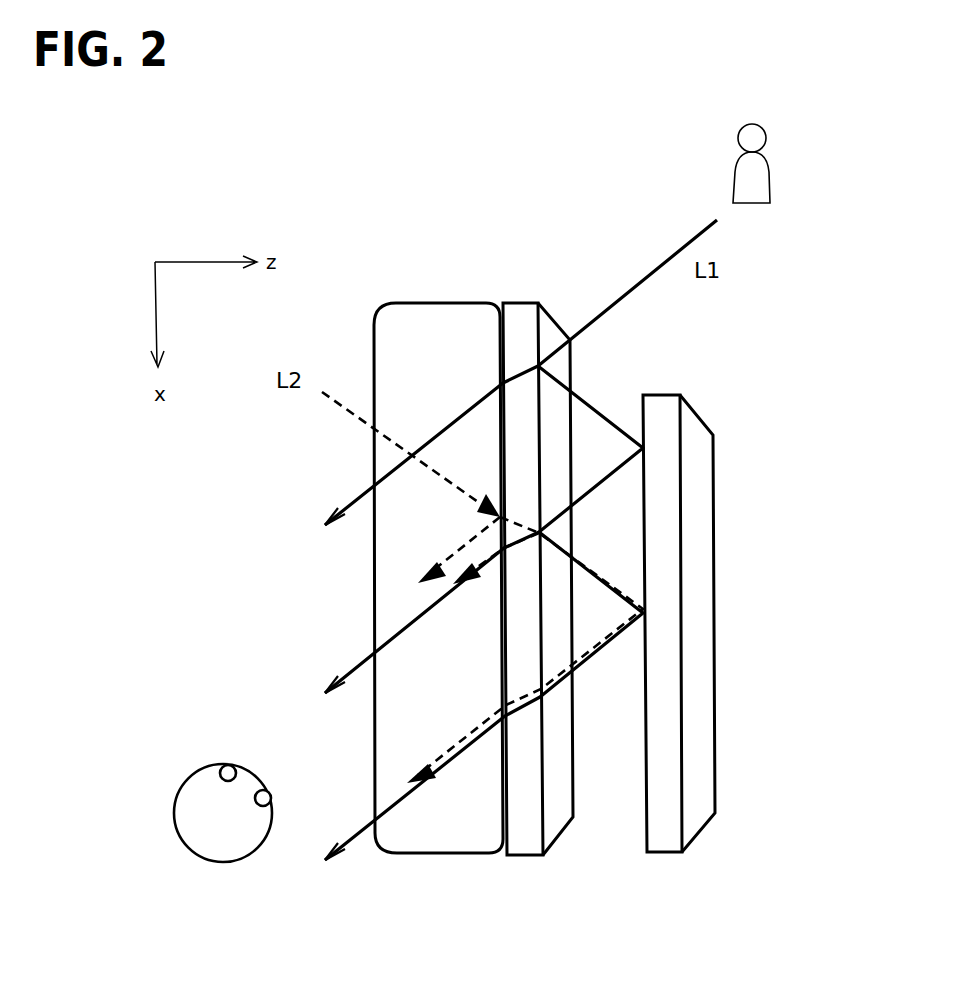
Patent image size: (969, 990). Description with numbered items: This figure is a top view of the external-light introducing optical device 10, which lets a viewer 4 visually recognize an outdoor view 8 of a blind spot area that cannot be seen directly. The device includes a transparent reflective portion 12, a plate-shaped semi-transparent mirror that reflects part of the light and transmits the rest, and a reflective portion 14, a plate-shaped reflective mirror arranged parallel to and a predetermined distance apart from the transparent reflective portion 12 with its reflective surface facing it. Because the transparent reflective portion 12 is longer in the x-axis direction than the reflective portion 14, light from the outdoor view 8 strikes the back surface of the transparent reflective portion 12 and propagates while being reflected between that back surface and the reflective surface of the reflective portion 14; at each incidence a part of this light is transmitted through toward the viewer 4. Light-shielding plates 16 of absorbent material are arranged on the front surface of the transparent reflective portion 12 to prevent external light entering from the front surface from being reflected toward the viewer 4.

The viewer 4 is at (243, 867).
The outdoor view 8 is at (760, 181).
The optical device 10 is at (541, 226).
The transparent reflective portion 12 is at (523, 838).
The reflective portion 14 is at (662, 838).
The light-shielding plate 16 is at (432, 838).